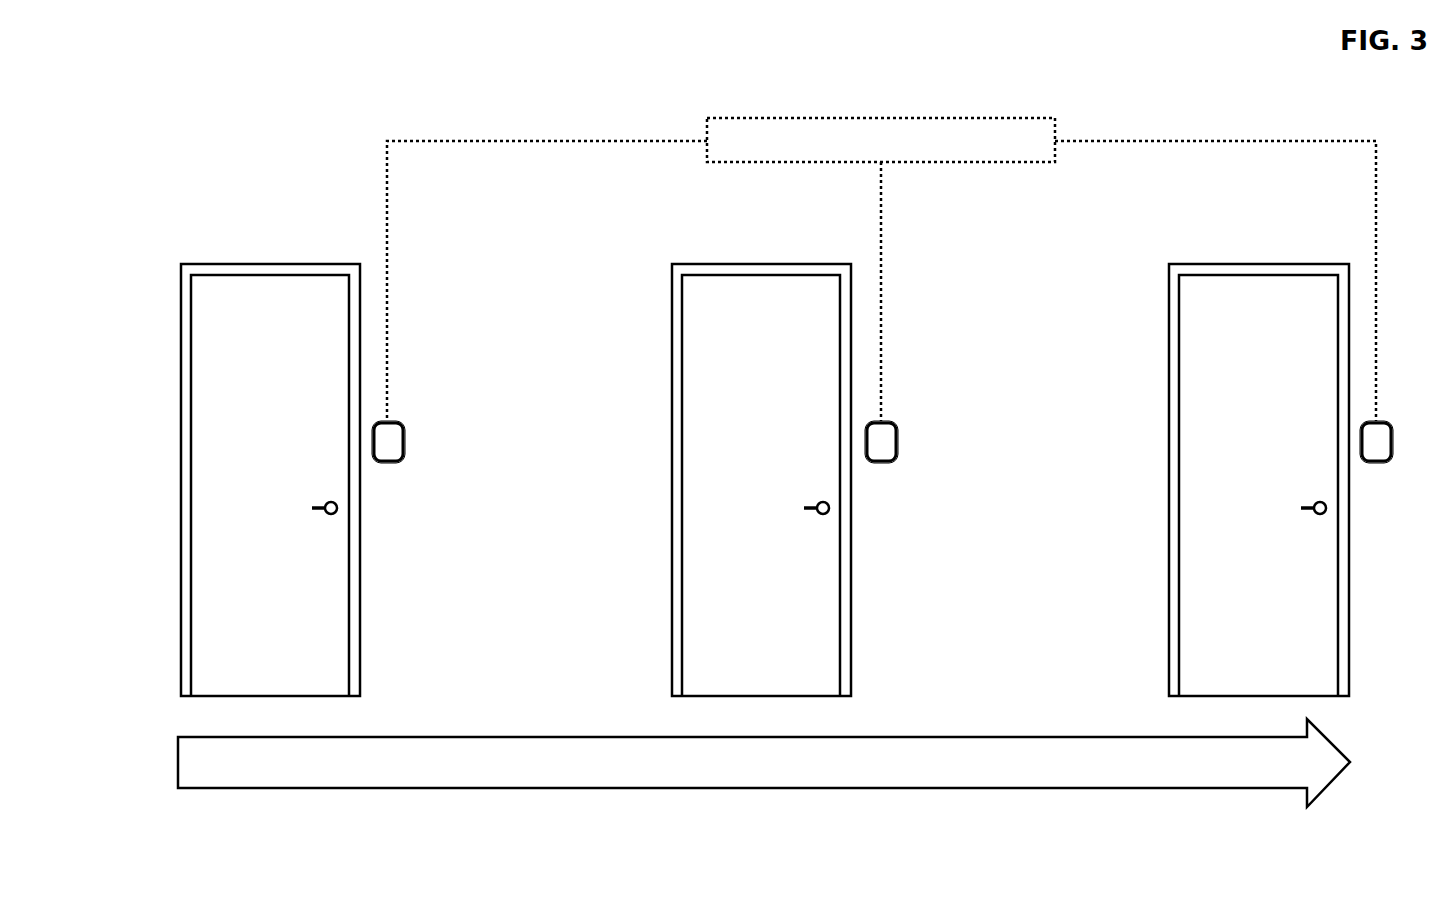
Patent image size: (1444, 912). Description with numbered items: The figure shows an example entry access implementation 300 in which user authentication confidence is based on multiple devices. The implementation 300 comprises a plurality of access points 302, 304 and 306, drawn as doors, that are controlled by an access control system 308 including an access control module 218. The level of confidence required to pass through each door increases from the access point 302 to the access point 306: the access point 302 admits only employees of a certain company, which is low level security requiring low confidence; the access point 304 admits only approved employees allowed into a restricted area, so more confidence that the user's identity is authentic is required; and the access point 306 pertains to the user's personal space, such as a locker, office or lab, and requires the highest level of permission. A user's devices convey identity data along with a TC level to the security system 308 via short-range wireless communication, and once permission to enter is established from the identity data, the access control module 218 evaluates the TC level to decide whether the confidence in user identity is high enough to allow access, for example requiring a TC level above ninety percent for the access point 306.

The entry access implementation 300 is at (169, 232).
The access control module 218 is at (1003, 152).
The access point 302 is at (181, 297).
The access point 304 is at (672, 297).
The access point 306 is at (1169, 297).
The access control system 308 is at (405, 440).